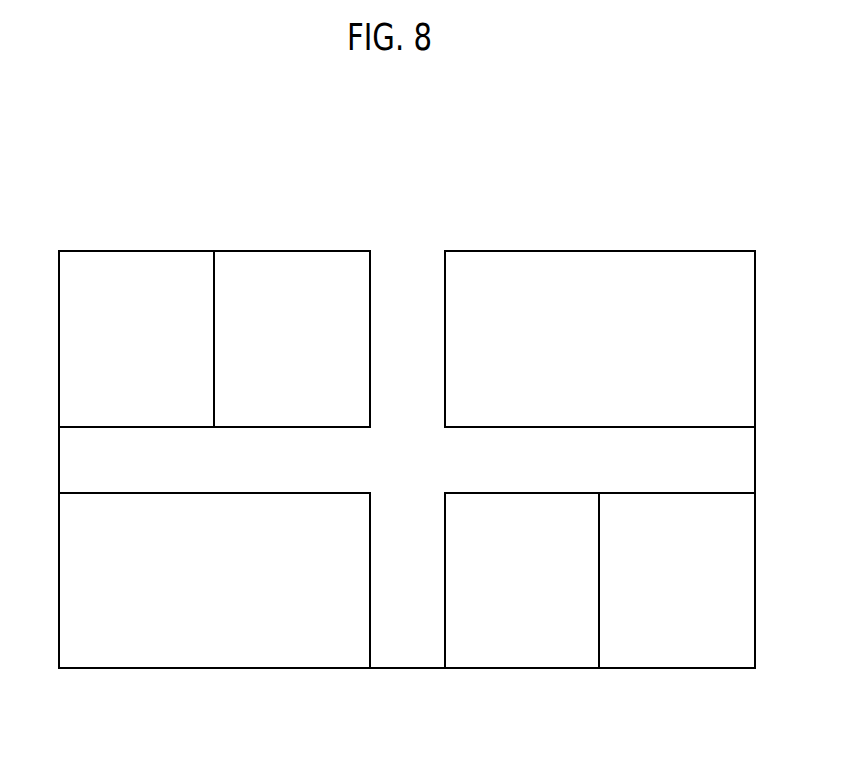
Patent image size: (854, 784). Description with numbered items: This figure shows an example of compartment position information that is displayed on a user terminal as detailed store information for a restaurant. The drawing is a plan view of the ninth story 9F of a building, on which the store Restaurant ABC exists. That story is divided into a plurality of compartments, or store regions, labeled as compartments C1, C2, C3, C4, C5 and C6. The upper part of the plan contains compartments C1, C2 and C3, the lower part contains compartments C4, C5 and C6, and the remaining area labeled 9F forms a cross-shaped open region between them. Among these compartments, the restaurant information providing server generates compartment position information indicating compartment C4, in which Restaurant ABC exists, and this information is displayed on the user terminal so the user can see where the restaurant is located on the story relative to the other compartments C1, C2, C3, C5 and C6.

The compartment C1 is at (129, 265).
The compartment C2 is at (292, 264).
The compartment C3 is at (588, 265).
The compartment C4 is at (199, 660).
The compartment C5 is at (522, 660).
The compartment C6 is at (668, 660).
The ninth story 9F is at (407, 459).